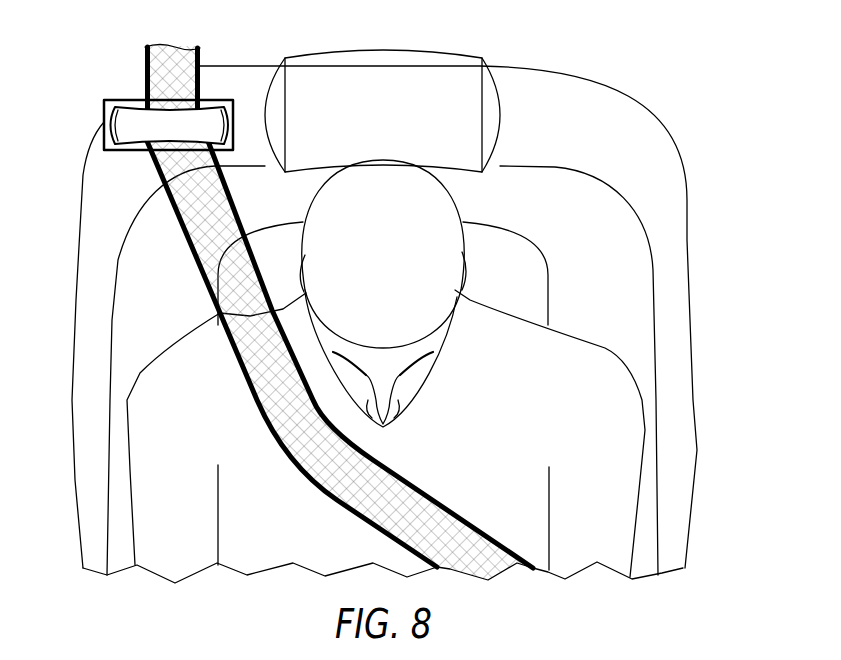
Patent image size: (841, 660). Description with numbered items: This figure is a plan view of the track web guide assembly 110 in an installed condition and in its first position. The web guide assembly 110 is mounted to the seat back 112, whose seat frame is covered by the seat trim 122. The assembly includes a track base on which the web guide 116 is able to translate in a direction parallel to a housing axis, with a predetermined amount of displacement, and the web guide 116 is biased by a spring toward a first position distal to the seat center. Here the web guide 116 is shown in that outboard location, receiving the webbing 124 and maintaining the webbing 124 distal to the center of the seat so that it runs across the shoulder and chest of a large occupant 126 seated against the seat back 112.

The track web guide assembly 110 is at (115, 98).
The seat back 112 is at (658, 118).
The web guide 116 is at (140, 122).
The seat trim 122 is at (232, 66).
The webbing 124 is at (337, 500).
The large occupant 126 is at (630, 374).